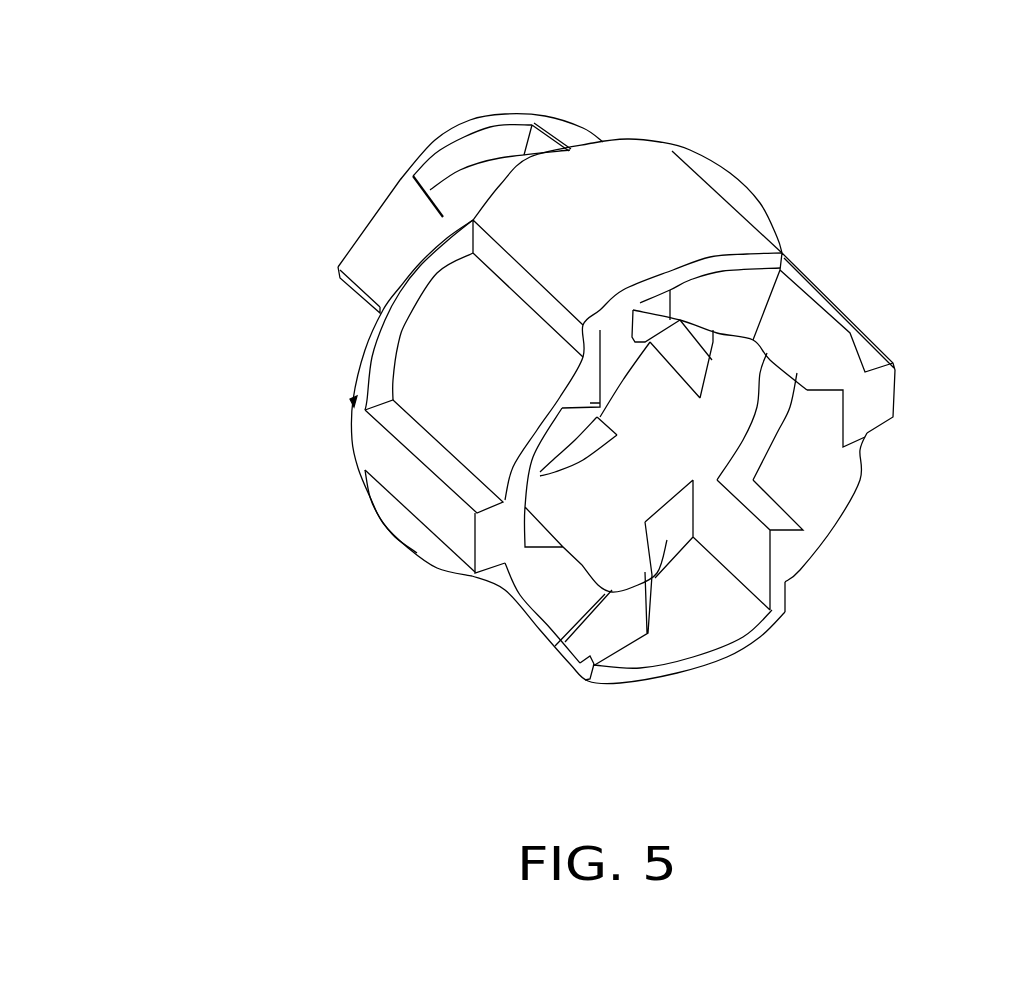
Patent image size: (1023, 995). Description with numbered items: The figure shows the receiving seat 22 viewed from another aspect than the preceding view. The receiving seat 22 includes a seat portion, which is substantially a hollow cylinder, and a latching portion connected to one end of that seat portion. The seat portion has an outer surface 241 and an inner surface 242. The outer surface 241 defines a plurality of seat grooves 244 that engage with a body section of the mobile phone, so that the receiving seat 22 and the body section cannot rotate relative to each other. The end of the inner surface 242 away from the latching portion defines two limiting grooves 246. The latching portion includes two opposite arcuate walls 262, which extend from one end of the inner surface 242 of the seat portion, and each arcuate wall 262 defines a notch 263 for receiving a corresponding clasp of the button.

The receiving seat 22 is at (503, 103).
The outer surface 241 is at (610, 193).
The inner surface 242 is at (600, 544).
The seat groove 244 is at (463, 382).
The limiting groove 246 is at (808, 445).
The arcuate wall 262 is at (373, 248).
The notch 263 is at (467, 157).